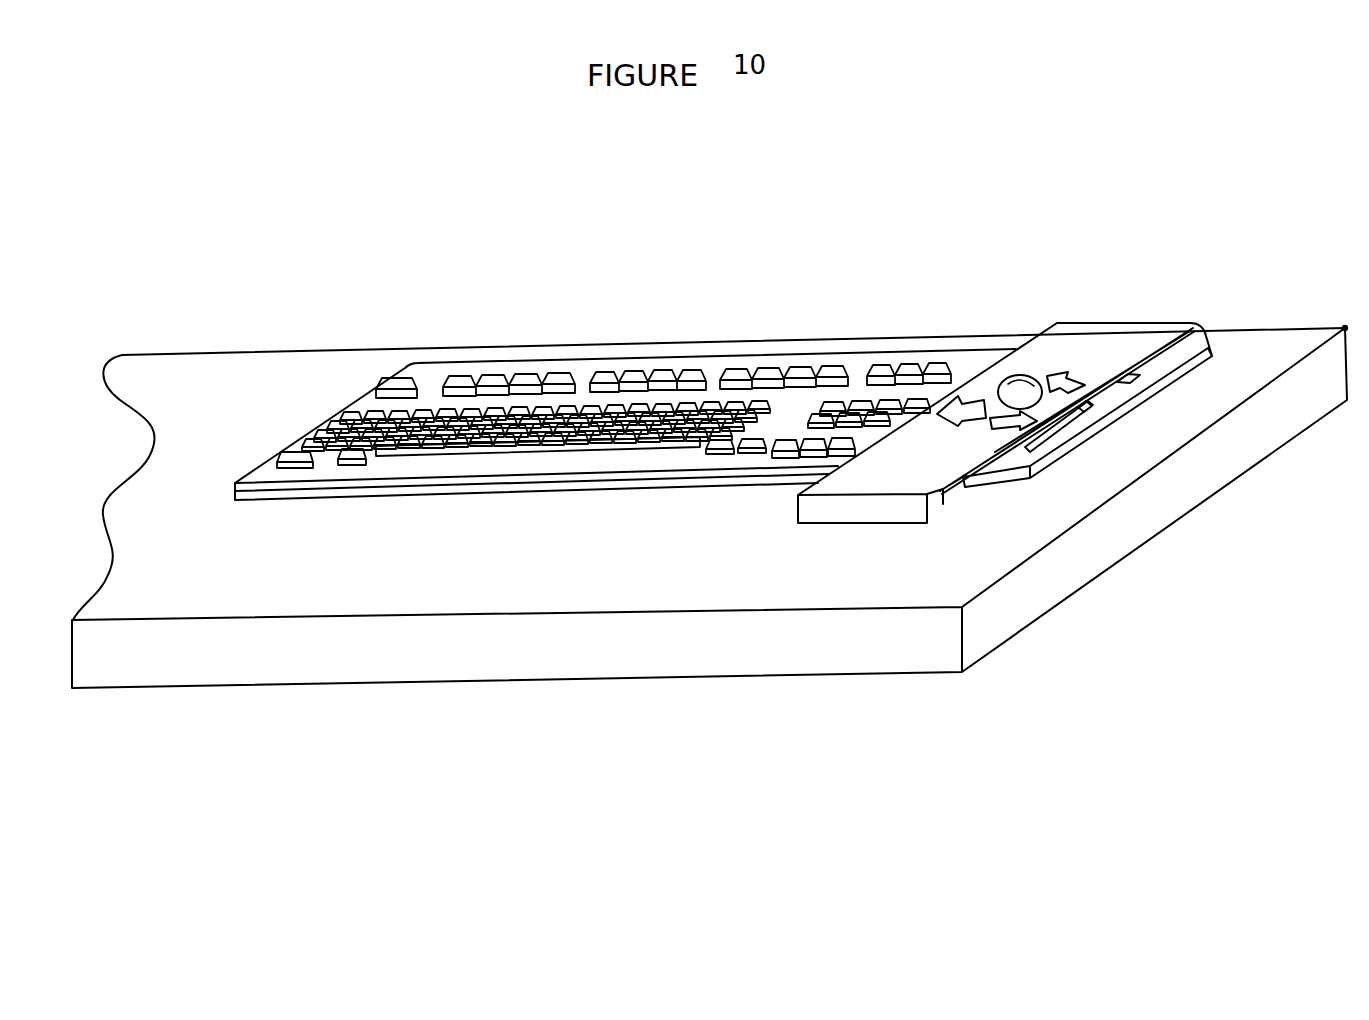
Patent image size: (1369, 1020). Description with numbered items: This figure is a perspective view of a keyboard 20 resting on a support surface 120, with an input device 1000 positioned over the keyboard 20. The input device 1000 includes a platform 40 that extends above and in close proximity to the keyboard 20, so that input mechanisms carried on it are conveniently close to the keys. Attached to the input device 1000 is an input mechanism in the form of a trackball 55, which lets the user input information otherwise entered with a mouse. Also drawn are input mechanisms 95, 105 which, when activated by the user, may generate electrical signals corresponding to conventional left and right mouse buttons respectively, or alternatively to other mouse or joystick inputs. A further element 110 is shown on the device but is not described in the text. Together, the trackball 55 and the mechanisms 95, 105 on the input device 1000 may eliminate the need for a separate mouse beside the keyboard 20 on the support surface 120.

The keyboard 20 is at (533, 366).
The platform 40 is at (900, 482).
The trackball 55 is at (1012, 380).
The input mechanism 95 is at (963, 407).
The input mechanism 105 is at (1067, 380).
The down button 110 is at (1020, 422).
The support surface 120 is at (444, 578).
The input device 1000 is at (1028, 456).